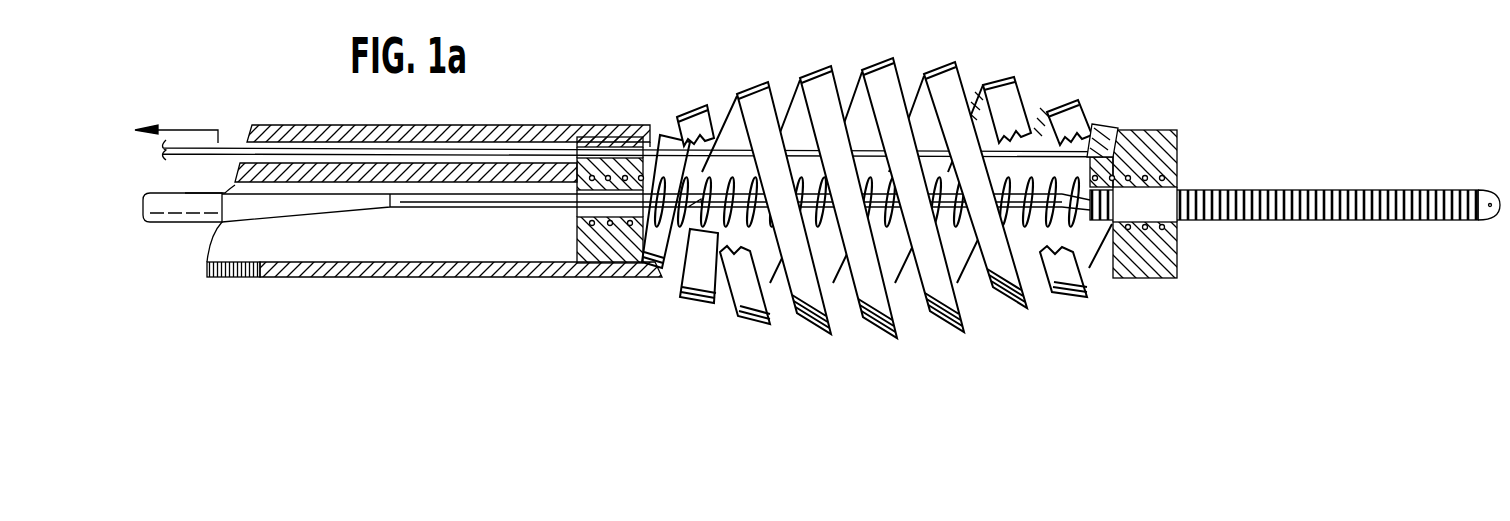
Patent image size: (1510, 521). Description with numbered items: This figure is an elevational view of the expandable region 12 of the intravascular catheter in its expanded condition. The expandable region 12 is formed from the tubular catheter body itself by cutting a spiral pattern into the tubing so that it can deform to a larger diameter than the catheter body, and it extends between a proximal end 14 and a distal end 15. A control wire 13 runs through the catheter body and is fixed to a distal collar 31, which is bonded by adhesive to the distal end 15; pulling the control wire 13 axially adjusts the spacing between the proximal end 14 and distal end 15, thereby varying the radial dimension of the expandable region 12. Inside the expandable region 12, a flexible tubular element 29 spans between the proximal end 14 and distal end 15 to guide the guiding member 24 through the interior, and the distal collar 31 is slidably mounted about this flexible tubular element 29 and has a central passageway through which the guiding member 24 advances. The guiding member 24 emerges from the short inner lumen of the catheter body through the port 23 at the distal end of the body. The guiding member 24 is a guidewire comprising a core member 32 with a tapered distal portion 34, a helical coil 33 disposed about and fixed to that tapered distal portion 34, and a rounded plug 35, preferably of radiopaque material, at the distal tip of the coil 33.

The expandable region 12 is at (952, 60).
The control wire 13 is at (228, 145).
The proximal end 14 is at (653, 133).
The distal end 15 is at (1093, 122).
The port 23 is at (572, 242).
The guiding member 24 is at (166, 210).
The flexible tubular element 29 is at (1010, 172).
The distal collar 31 is at (1178, 142).
The core member 32 is at (185, 192).
The helical coil 33 is at (1337, 200).
The tapered distal portion 34 is at (541, 200).
The rounded plug 35 is at (1490, 223).